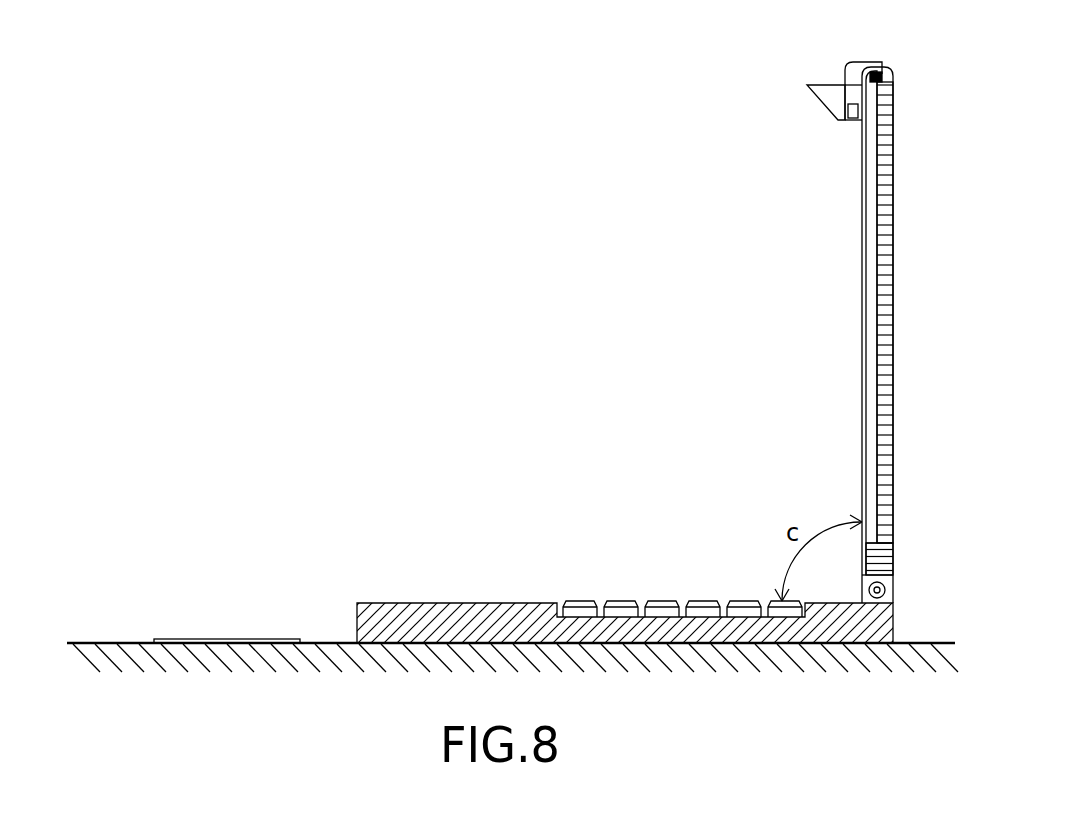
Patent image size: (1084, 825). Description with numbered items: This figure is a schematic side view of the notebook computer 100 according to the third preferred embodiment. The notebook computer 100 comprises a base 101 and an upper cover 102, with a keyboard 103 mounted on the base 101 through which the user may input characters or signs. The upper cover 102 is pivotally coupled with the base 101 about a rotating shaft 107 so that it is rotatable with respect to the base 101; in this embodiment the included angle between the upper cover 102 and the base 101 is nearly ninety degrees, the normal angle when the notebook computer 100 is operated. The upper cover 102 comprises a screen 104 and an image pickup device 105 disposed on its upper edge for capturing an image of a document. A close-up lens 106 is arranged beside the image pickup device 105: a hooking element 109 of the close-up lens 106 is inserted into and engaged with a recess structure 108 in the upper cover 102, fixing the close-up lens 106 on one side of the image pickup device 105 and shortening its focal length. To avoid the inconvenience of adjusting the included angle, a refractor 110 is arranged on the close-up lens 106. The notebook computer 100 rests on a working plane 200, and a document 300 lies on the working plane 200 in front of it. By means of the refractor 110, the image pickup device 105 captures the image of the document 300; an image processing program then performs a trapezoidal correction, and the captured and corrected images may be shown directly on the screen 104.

The notebook computer 100 is at (613, 106).
The base 101 is at (904, 630).
The upper cover 102 is at (893, 320).
The keyboard 103 is at (618, 600).
The screen 104 is at (868, 315).
The image pickup device 105 is at (866, 103).
The close-up lens 106 is at (857, 110).
The rotating shaft 107 is at (879, 583).
The recess structure 108 is at (885, 78).
The hooking element 109 is at (850, 92).
The refractor 110 is at (828, 98).
The working plane 200 is at (130, 643).
The document 300 is at (232, 639).